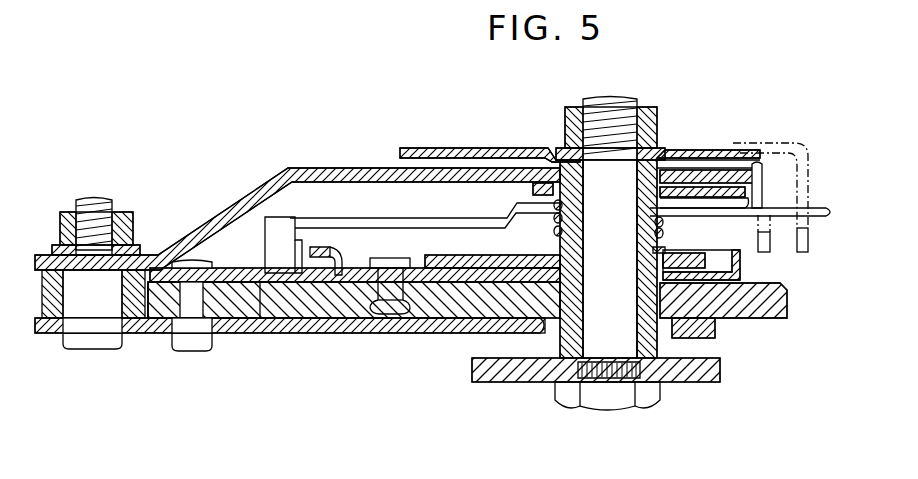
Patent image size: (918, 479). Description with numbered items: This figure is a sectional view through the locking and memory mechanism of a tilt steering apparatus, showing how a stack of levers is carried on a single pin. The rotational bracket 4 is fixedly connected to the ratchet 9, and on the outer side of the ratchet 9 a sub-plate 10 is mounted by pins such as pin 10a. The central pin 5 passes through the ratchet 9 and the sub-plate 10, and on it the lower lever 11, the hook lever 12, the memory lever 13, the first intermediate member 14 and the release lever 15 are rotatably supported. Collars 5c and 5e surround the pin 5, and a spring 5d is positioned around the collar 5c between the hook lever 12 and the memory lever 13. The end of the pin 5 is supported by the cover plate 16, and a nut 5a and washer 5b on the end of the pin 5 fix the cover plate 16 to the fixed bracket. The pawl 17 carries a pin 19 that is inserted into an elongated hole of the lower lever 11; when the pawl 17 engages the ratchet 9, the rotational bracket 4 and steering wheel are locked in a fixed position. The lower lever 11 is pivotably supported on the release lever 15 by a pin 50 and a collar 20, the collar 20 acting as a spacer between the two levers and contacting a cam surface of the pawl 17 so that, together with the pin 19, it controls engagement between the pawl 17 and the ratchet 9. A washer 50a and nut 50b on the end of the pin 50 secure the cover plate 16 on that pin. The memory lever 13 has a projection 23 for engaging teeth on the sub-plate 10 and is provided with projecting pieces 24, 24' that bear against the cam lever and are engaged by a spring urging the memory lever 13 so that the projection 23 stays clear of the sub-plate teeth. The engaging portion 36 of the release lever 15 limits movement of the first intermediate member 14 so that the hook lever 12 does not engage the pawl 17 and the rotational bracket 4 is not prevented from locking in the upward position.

The rotational bracket 4 is at (510, 382).
The pin 5 is at (615, 186).
The nut 5a is at (655, 118).
The washer 5b is at (565, 148).
The collar 5c is at (705, 335).
The spring 5d is at (665, 226).
The collar 5e is at (668, 170).
The ratchet 9 is at (305, 300).
The sub-plate 10 is at (345, 282).
The pin 10a is at (382, 264).
The lower lever 11 is at (385, 333).
The hook lever 12 is at (450, 268).
The memory lever 13 is at (362, 223).
The first intermediate member 14 is at (535, 188).
The release lever 15 is at (213, 205).
The cover plate 16 is at (500, 147).
The pawl 17 is at (248, 300).
The pin 19 is at (193, 351).
The collar 20 is at (135, 305).
The projection 23 is at (284, 237).
The projecting piece 24 is at (755, 220).
The projecting piece 24' is at (797, 247).
The engaging portion 36 is at (805, 190).
The pin 50 is at (67, 318).
The washer 50a is at (120, 212).
The nut 50b is at (140, 251).